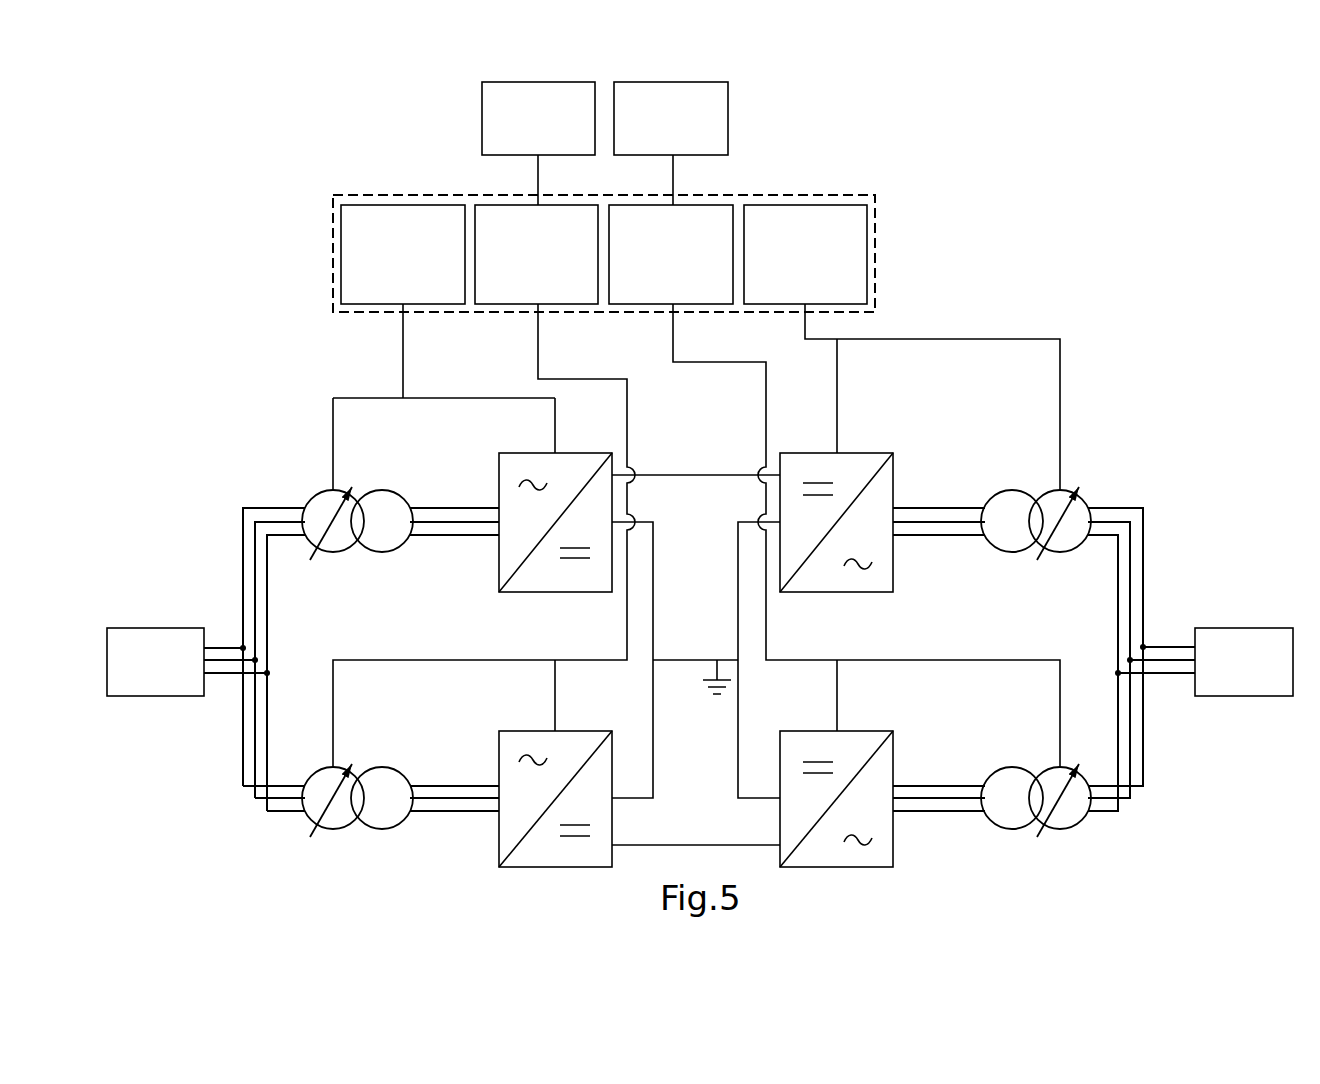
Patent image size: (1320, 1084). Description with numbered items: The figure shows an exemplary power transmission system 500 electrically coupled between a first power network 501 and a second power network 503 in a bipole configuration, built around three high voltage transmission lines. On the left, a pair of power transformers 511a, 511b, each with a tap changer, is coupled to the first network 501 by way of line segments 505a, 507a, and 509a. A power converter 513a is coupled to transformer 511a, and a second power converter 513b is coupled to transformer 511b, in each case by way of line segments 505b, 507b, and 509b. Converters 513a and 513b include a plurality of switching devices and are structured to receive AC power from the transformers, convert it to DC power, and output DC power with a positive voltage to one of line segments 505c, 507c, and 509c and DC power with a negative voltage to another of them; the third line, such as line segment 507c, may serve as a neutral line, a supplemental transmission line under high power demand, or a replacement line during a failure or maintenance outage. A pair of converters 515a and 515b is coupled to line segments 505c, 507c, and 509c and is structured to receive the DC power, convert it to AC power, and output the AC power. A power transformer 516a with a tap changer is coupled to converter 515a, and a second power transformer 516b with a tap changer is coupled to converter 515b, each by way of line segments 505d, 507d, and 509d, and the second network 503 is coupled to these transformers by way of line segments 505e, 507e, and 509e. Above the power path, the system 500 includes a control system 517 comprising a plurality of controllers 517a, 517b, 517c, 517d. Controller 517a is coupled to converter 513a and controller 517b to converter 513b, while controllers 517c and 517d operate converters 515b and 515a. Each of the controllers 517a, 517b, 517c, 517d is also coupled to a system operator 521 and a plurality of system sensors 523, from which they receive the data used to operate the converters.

The power transmission system 500 is at (1104, 276).
The first power network 501 is at (118, 628).
The second power network 503 is at (1282, 628).
The line segment 505a is at (268, 573).
The line segment 505b is at (475, 537).
The line segment 505c is at (687, 845).
The line segment 505d is at (913, 537).
The line segment 505e is at (1183, 677).
The line segment 507a is at (255, 557).
The line segment 507b is at (430, 524).
The line segment 507c is at (687, 660).
The line segment 507d is at (957, 523).
The line segment 507e is at (1157, 662).
The line segment 509a is at (243, 527).
The line segment 509b is at (418, 508).
The line segment 509c is at (695, 479).
The line segment 509d is at (945, 508).
The line segment 509e is at (1170, 647).
The power transformer 511a is at (318, 492).
The power transformer 511b is at (318, 770).
The power converter 513a is at (513, 452).
The second power converter 513b is at (513, 730).
The converter 515a is at (873, 452).
The converter 515b is at (873, 730).
The power transformer 516a is at (1043, 493).
The second power transformer 516b is at (1043, 771).
The control system 517 is at (333, 213).
The controller 517a is at (403, 254).
The controller 517b is at (536, 254).
The controller 517c is at (671, 254).
The controller 517d is at (805, 254).
The system operator 521 is at (482, 93).
The system sensors 523 is at (728, 93).